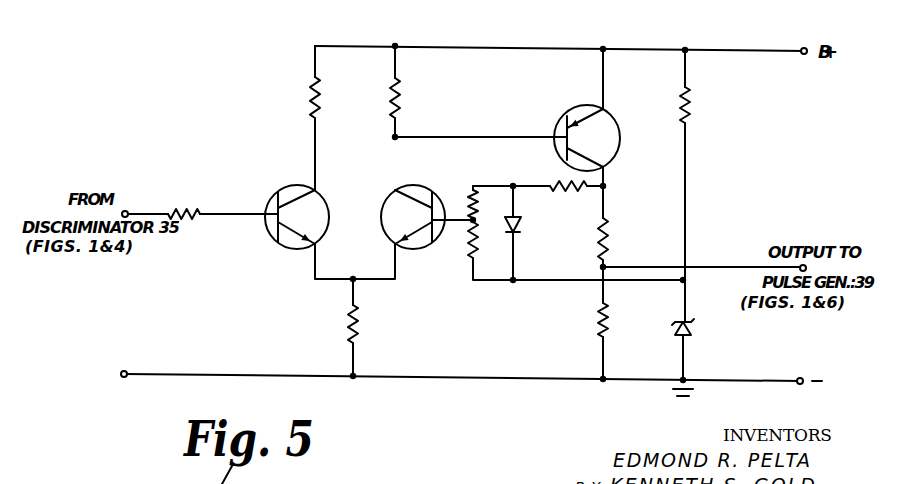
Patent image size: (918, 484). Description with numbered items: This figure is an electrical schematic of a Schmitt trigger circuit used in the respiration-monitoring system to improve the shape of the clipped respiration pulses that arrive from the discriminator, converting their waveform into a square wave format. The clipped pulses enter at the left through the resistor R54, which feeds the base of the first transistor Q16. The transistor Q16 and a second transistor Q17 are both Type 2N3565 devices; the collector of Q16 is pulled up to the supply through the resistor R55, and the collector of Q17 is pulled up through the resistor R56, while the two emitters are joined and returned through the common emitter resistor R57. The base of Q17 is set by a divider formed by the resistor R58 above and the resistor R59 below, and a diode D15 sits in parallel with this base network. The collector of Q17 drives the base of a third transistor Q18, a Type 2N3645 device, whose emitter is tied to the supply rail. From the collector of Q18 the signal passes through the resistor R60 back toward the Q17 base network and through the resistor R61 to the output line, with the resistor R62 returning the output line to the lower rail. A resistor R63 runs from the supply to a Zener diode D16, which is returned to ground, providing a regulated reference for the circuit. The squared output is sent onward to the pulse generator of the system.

The transistor Q16 is at (289, 252).
The transistor Q17 is at (389, 201).
The transistor Q18 is at (606, 117).
The resistor R54 is at (181, 210).
The resistor R55 is at (311, 94).
The resistor R56 is at (399, 91).
The resistor R57 is at (359, 327).
The resistor R58 is at (469, 199).
The resistor R59 is at (469, 251).
The resistor R60 is at (561, 191).
The resistor R61 is at (608, 232).
The resistor R62 is at (593, 306).
The resistor R63 is at (690, 103).
The diode D15 is at (522, 231).
The Zener diode D16 is at (688, 333).